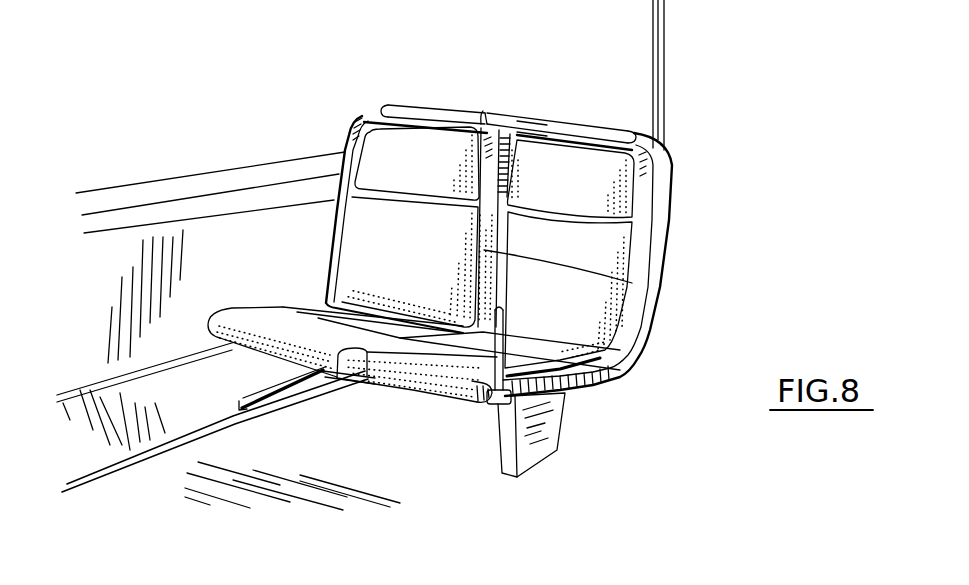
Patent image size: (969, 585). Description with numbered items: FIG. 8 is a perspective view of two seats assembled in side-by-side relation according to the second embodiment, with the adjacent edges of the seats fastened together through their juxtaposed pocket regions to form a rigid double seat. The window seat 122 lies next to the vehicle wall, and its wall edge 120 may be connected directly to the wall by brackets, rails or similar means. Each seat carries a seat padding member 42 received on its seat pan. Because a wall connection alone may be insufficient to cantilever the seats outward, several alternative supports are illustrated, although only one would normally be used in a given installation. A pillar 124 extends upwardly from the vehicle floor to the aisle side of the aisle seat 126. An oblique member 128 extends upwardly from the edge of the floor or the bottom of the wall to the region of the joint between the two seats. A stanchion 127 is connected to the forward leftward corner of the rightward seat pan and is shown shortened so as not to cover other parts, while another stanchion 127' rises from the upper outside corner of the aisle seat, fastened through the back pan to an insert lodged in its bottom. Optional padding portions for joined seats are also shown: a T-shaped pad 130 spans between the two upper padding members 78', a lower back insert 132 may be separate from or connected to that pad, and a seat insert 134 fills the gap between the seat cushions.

The seat padding member 42 is at (270, 323).
The padding member 78' is at (509, 98).
The wall edge 120 is at (332, 148).
The window seat 122 is at (412, 157).
The pillar 124 is at (553, 420).
The aisle seat 126 is at (605, 253).
The stanchion 127 is at (581, 362).
The stanchion 127' is at (699, 75).
The oblique member 128 is at (298, 385).
The T-shaped pad 130 is at (517, 122).
The lower back insert 132 is at (632, 283).
The seat insert 134 is at (367, 350).